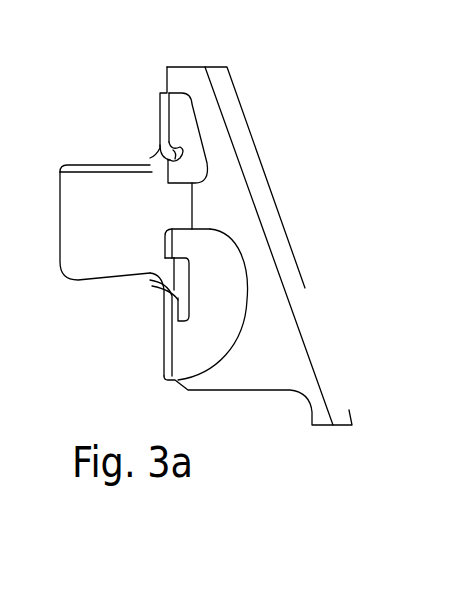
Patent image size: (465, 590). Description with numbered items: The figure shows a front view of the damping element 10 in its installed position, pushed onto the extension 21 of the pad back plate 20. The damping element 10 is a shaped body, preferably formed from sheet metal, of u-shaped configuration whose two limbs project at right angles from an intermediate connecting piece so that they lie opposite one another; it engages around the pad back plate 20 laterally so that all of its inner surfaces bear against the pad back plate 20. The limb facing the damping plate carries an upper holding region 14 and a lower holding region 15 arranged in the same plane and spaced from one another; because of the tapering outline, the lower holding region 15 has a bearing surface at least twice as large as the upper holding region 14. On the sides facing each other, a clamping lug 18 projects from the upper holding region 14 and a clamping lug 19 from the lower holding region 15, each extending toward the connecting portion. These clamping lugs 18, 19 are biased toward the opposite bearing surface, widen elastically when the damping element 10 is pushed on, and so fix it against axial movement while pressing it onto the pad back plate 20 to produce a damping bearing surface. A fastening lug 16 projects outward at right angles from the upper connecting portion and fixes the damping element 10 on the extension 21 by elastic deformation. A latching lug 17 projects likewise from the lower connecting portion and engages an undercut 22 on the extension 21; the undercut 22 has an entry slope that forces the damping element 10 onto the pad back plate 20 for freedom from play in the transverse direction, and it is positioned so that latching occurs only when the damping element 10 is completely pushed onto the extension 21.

The damping element 10 is at (222, 372).
The upper holding region 14 is at (183, 127).
The lower holding region 15 is at (215, 295).
The fastening lug 16 is at (157, 160).
The latching lug 17 is at (155, 292).
The clamping lug 18 is at (177, 158).
The clamping lug 19 is at (170, 238).
The pad back plate 20 is at (272, 355).
The extension 21 is at (75, 205).
The undercut 22 is at (150, 277).